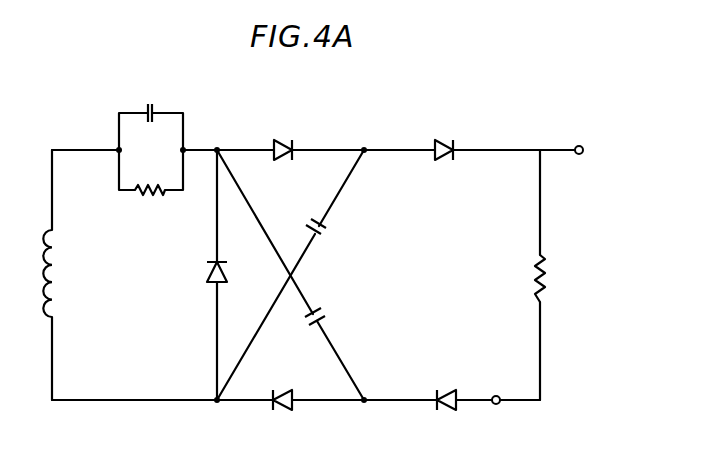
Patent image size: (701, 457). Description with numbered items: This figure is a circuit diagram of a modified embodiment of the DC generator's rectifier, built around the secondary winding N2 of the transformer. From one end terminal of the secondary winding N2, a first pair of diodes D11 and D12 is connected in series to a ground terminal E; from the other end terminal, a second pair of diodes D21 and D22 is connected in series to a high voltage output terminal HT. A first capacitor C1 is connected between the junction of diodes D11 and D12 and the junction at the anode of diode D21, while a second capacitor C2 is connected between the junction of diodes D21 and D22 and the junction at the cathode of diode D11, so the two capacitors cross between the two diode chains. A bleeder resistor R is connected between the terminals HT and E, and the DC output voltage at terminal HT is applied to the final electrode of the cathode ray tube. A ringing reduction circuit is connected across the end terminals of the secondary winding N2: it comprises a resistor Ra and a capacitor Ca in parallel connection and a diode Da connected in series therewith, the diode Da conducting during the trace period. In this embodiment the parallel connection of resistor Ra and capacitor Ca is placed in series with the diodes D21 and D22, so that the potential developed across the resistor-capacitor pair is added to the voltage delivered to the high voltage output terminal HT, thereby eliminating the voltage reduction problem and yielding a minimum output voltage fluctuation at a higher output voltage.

The capacitor Ca is at (143, 108).
The resistor Ra is at (143, 194).
The secondary winding N2 is at (55, 275).
The diode Da is at (208, 274).
The first diode of second pair D21 is at (284, 140).
The second diode of second pair D22 is at (444, 140).
The high voltage output terminal HT is at (579, 145).
The second capacitor C2 is at (326, 230).
The first capacitor C1 is at (325, 320).
The bleeder resistor R is at (548, 278).
The first diode of first pair D11 is at (284, 410).
The second diode of first pair D12 is at (448, 410).
The ground terminal E is at (498, 395).